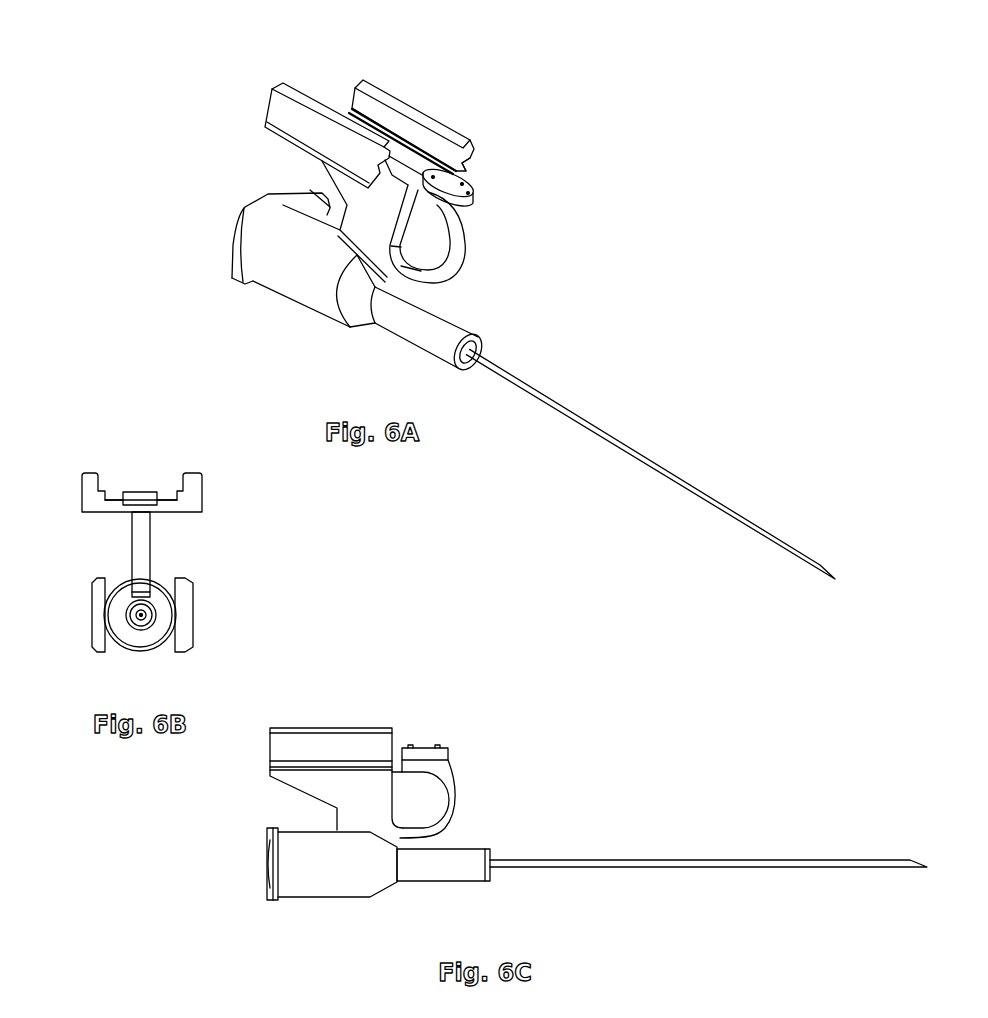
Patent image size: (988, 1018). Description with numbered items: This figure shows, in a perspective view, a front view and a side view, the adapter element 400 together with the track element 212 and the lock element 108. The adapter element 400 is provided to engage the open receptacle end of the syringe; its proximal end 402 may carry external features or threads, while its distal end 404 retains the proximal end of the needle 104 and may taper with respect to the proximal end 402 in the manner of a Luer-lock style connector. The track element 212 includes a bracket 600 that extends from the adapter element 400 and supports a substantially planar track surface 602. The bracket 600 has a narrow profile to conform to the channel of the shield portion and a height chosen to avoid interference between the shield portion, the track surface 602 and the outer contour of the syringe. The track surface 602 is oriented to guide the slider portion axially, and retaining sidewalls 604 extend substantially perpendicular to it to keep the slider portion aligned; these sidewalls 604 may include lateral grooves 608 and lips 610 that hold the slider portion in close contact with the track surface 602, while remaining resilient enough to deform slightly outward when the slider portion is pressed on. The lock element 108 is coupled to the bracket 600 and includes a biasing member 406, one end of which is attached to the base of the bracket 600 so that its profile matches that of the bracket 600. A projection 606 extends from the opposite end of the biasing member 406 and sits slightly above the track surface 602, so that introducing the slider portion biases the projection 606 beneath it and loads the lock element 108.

In FIG. 6A, the needle 104 is at (668, 471).
In FIG. 6B, the needle 104 is at (137, 625).
In FIG. 6C, the needle 104 is at (705, 860).
In FIG. 6A, the lock element 108 is at (506, 212).
In FIG. 6C, the lock element 108 is at (471, 758).
In FIG. 6A, the track element 212 is at (437, 82).
In FIG. 6A, the adapter element 400 is at (292, 290).
In FIG. 6B, the adapter element 400 is at (93, 601).
In FIG. 6C, the adapter element 400 is at (330, 890).
In FIG. 6A, the proximal end 402 is at (248, 212).
In FIG. 6C, the proximal end 402 is at (263, 865).
In FIG. 6A, the distal end 404 is at (474, 345).
In FIG. 6C, the distal end 404 is at (496, 848).
In FIG. 6A, the biasing member 406 is at (466, 247).
In FIG. 6B, the biasing member 406 is at (150, 546).
In FIG. 6C, the biasing member 406 is at (455, 790).
In FIG. 6A, the bracket 600 is at (344, 186).
In FIG. 6B, the bracket 600 is at (131, 528).
In FIG. 6C, the bracket 600 is at (306, 792).
In FIG. 6A, the substantially planar track surface 602 is at (352, 108).
In FIG. 6B, the substantially planar track surface 602 is at (169, 493).
In FIG. 6A, the retaining sidewalls 604 is at (277, 110).
In FIG. 6B, the retaining sidewalls 604 is at (205, 491).
In FIG. 6C, the retaining sidewalls 604 is at (330, 740).
In FIG. 6A, the projection 606 is at (475, 190).
In FIG. 6B, the projection 606 is at (139, 491).
In FIG. 6C, the projection 606 is at (445, 752).
In FIG. 6A, the lateral grooves 608 is at (474, 156).
In FIG. 6A, the lips 610 is at (437, 130).